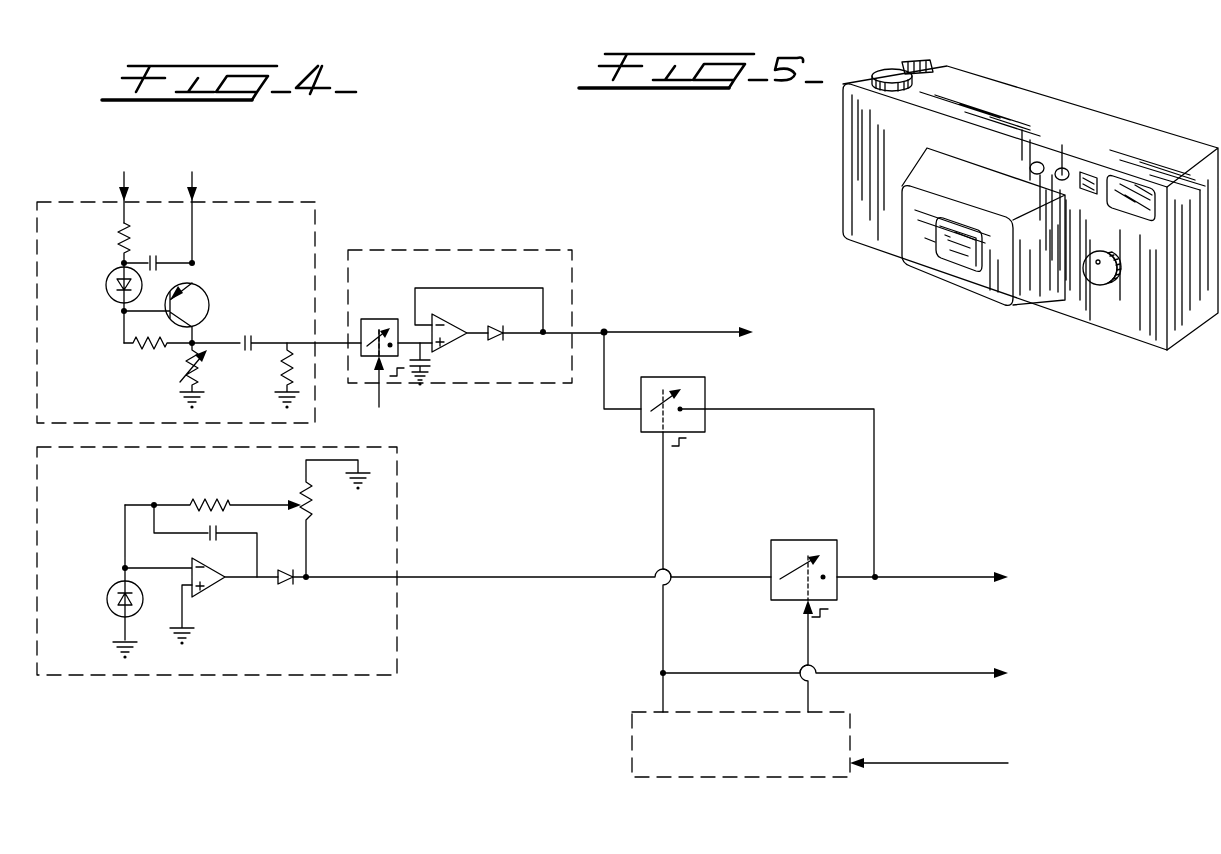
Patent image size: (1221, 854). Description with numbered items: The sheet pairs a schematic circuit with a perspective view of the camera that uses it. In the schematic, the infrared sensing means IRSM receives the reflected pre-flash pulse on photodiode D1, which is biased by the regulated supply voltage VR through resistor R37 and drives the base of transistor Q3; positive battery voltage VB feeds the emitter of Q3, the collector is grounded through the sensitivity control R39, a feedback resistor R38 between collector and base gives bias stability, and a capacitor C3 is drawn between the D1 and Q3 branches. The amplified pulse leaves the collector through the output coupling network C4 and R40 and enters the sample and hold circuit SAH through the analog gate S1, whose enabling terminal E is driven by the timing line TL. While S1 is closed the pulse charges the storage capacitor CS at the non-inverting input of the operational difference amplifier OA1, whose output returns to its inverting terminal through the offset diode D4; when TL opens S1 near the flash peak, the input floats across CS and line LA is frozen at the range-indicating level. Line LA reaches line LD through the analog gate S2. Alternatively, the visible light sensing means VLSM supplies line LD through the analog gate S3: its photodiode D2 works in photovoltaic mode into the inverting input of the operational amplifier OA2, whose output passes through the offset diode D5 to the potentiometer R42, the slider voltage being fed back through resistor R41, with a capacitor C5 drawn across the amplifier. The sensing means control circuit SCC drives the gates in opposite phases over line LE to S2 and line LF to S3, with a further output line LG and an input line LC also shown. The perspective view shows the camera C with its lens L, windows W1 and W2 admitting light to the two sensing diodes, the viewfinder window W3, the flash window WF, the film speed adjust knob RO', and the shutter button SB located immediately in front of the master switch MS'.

In FIG. 4, the infrared sensing means IRSM is at (235, 202).
In FIG. 4, the regulated supply voltage VR is at (124, 186).
In FIG. 4, the positive battery voltage VB is at (192, 206).
In FIG. 4, the resistor R37 is at (118, 238).
In FIG. 4, the capacitor C3 is at (165, 250).
In FIG. 4, the photodiode D1 is at (106, 286).
In FIG. 4, the transistor Q3 is at (200, 290).
In FIG. 4, the feedback resistor R38 is at (132, 350).
In FIG. 4, the sensitivity control R39 is at (180, 374).
In FIG. 4, the coupling capacitor C4 is at (254, 334).
In FIG. 4, the coupling resistor R40 is at (278, 364).
In FIG. 4, the sample and hold circuit SAH is at (420, 250).
In FIG. 4, the analog gate S1 is at (384, 318).
In FIG. 4, the enabling terminal E is at (374, 366).
In FIG. 4, the timing line TL is at (377, 395).
In FIG. 4, the storage capacitor CS is at (437, 364).
In FIG. 4, the operational difference amplifier OA1 is at (438, 316).
In FIG. 4, the offset diode D4 is at (494, 328).
In FIG. 4, the line LA is at (655, 333).
In FIG. 4, the analog gate S2 is at (686, 377).
In FIG. 4, the visible light sensing means VLSM is at (397, 522).
In FIG. 4, the resistor R41 is at (200, 503).
In FIG. 4, the potentiometer R42 is at (312, 512).
In FIG. 4, the capacitor C5 is at (218, 532).
In FIG. 4, the operational amplifier OA2 is at (196, 558).
In FIG. 4, the photodiode D2 is at (106, 600).
In FIG. 4, the offset diode D5 is at (294, 586).
In FIG. 4, the line LD is at (975, 578).
In FIG. 4, the analog gate S3 is at (814, 540).
In FIG. 4, the line LE is at (664, 638).
In FIG. 4, the line LF is at (810, 628).
In FIG. 4, the line G LG is at (940, 672).
In FIG. 4, the sensing means control circuit SCC is at (884, 710).
In FIG. 4, the line C LC is at (934, 763).
In FIG. 5, the camera C is at (1098, 100).
In FIG. 5, the lens L is at (962, 254).
In FIG. 5, the window W1 is at (1063, 168).
In FIG. 5, the window W2 is at (1038, 162).
In FIG. 5, the viewfinder window W3 is at (1088, 195).
In FIG. 5, the flash window WF is at (1150, 215).
In FIG. 5, the film speed adjust knob RO' is at (1115, 290).
In FIG. 5, the shutter button SB is at (890, 72).
In FIG. 5, the master switch MS' is at (938, 52).